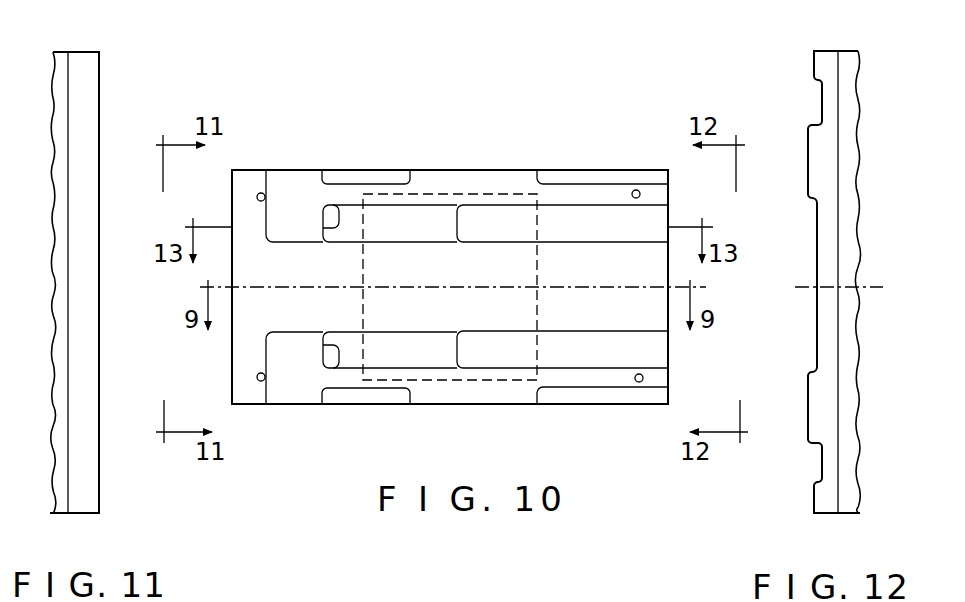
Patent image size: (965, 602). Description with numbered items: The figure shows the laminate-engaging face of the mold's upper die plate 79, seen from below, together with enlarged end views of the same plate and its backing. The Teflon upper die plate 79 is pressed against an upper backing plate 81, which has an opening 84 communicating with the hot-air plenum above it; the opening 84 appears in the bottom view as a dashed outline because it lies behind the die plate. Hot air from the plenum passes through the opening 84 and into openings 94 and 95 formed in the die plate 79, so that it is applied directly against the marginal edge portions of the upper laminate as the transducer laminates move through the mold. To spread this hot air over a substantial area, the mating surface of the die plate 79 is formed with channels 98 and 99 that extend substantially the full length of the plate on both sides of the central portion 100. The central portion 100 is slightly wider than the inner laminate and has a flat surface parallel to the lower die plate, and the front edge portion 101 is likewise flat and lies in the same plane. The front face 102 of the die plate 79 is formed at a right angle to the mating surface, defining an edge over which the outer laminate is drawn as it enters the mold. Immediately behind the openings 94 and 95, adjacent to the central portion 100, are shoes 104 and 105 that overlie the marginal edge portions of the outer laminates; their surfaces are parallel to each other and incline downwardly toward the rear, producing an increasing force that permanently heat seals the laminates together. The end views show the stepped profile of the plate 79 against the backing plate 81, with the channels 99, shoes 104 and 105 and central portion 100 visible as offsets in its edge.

In FIG. 10, the upper die plate 79 is at (520, 165).
In FIG. 11, the upper die plate 79 is at (88, 72).
In FIG. 12, the upper die plate 79 is at (830, 63).
In FIG. 11, the upper backing plate 81 is at (57, 102).
In FIG. 12, the upper backing plate 81 is at (845, 62).
In FIG. 10, the opening 84 is at (440, 194).
In FIG. 10, the opening 94 is at (336, 212).
In FIG. 10, the opening 95 is at (357, 380).
In FIG. 10, the channel 98 is at (350, 193).
In FIG. 10, the channel 99 is at (325, 352).
In FIG. 12, the channel 99 is at (822, 98).
In FIG. 10, the central portion 100 is at (285, 318).
In FIG. 12, the central portion 100 is at (815, 257).
In FIG. 10, the front edge portion 101 is at (247, 245).
In FIG. 11, the front face 102 is at (88, 108).
In FIG. 10, the shoe 104 is at (523, 217).
In FIG. 12, the shoe 104 is at (806, 155).
In FIG. 10, the shoe 105 is at (512, 356).
In FIG. 12, the shoe 105 is at (807, 413).